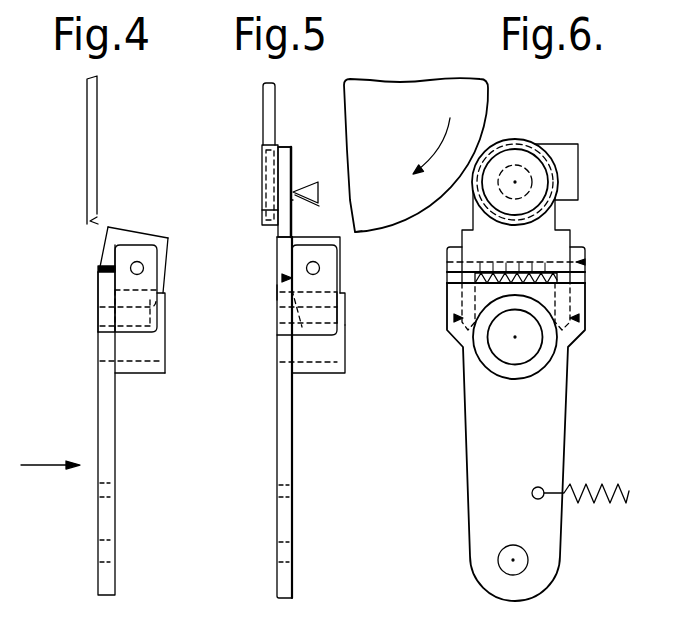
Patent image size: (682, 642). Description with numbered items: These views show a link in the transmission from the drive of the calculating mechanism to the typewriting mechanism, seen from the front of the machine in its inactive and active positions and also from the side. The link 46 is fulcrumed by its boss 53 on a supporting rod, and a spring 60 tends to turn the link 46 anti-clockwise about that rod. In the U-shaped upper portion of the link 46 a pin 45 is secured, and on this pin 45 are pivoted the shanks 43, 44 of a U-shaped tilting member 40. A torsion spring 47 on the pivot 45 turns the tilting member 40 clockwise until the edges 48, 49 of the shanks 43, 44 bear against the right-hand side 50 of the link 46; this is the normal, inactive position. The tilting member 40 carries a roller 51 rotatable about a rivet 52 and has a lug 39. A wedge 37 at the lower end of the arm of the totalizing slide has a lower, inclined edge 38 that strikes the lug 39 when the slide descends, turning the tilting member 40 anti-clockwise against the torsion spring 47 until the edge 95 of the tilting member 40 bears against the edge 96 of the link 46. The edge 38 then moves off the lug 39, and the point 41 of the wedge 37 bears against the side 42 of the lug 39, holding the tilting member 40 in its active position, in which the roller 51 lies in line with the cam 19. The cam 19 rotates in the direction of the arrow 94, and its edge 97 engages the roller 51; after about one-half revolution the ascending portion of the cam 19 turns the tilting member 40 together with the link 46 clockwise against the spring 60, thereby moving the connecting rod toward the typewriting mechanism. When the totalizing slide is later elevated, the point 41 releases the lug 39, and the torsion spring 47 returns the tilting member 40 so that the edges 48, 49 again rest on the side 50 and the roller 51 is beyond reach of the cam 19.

In FIG. 4, the cam 19 is at (87, 90).
In FIG. 5, the cam 19 is at (263, 95).
In FIG. 5, the wedge 37 is at (318, 185).
In FIG. 5, the lower edge of the wedge 38 is at (295, 201).
In FIG. 4, the lug 39 is at (130, 142).
In FIG. 5, the lug 39 is at (284, 150).
In FIG. 6, the lug 39 is at (578, 145).
In FIG. 4, the tilting member 40 is at (118, 213).
In FIG. 5, the tilting member 40 is at (288, 224).
In FIG. 6, the tilting member 40 is at (517, 238).
In FIG. 5, the point of the wedge 41 is at (319, 197).
In FIG. 4, the right-hand side of the tilting member 42 is at (135, 174).
In FIG. 5, the right-hand side of the tilting member 42 is at (292, 179).
In FIG. 4, the shank 43 is at (115, 242).
In FIG. 5, the shank 43 is at (292, 243).
In FIG. 6, the shank 43 is at (602, 278).
In FIG. 4, the shank 44 is at (115, 242).
In FIG. 6, the shank 44 is at (447, 272).
In FIG. 4, the pin 45 is at (144, 268).
In FIG. 5, the pin 45 is at (320, 268).
In FIG. 6, the pin 45 is at (584, 262).
In FIG. 4, the link 46 is at (100, 418).
In FIG. 5, the link 46 is at (285, 424).
In FIG. 6, the link 46 is at (540, 450).
In FIG. 6, the torsion spring 47 is at (580, 273).
In FIG. 4, the edge of shank 48 is at (115, 318).
In FIG. 5, the edge of shank 48 is at (346, 327).
In FIG. 6, the edge of shank 48 is at (578, 318).
In FIG. 4, the edge of shank 49 is at (115, 318).
In FIG. 5, the edge of shank 49 is at (346, 327).
In FIG. 6, the edge of shank 49 is at (455, 318).
In FIG. 4, the right-hand side of the link 50 is at (100, 327).
In FIG. 5, the right-hand side of the link 50 is at (292, 326).
In FIG. 4, the roller 51 is at (112, 137).
In FIG. 5, the roller 51 is at (264, 175).
In FIG. 6, the roller 51 is at (555, 163).
In FIG. 4, the rivet 52 is at (105, 160).
In FIG. 5, the rivet 52 is at (270, 195).
In FIG. 6, the rivet 52 is at (548, 183).
In FIG. 4, the boss 53 is at (148, 374).
In FIG. 5, the boss 53 is at (318, 374).
In FIG. 6, the boss 53 is at (552, 366).
In FIG. 6, the spring 60 is at (588, 502).
In FIG. 5, the arrow 94 is at (431, 146).
In FIG. 4, the edge of the tilting member 95 is at (98, 268).
In FIG. 5, the edge of the tilting member 95 is at (284, 276).
In FIG. 4, the edge of the link 96 is at (80, 276).
In FIG. 5, the edge of the link 96 is at (277, 285).
In FIG. 4, the edge of the cam 97 is at (91, 222).
In FIG. 5, the edge of the cam 97 is at (419, 214).